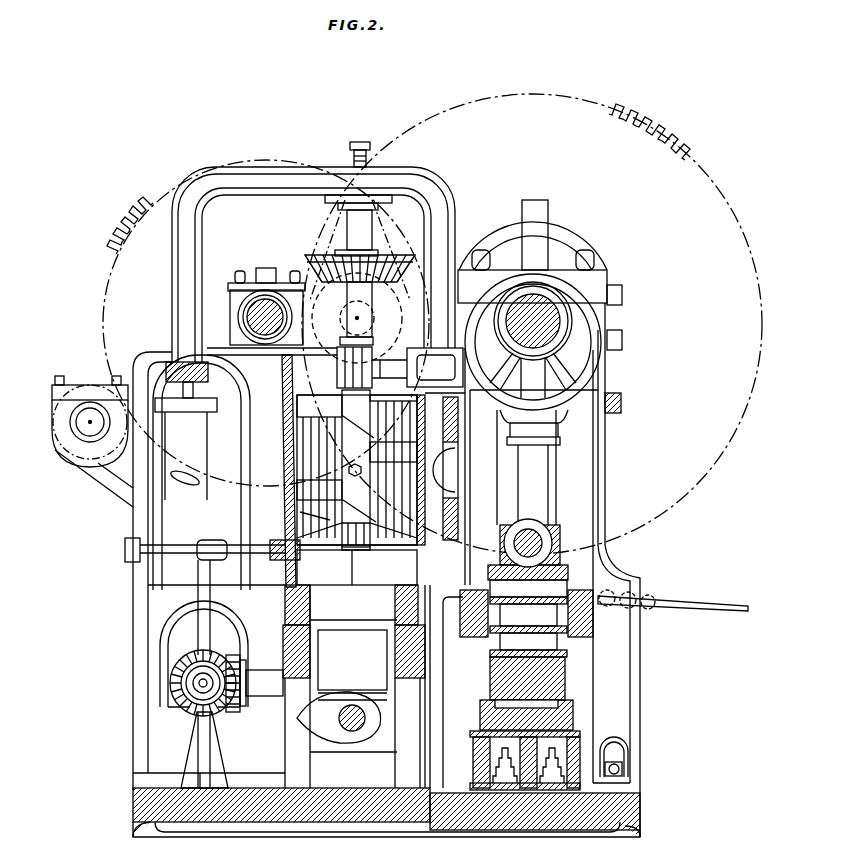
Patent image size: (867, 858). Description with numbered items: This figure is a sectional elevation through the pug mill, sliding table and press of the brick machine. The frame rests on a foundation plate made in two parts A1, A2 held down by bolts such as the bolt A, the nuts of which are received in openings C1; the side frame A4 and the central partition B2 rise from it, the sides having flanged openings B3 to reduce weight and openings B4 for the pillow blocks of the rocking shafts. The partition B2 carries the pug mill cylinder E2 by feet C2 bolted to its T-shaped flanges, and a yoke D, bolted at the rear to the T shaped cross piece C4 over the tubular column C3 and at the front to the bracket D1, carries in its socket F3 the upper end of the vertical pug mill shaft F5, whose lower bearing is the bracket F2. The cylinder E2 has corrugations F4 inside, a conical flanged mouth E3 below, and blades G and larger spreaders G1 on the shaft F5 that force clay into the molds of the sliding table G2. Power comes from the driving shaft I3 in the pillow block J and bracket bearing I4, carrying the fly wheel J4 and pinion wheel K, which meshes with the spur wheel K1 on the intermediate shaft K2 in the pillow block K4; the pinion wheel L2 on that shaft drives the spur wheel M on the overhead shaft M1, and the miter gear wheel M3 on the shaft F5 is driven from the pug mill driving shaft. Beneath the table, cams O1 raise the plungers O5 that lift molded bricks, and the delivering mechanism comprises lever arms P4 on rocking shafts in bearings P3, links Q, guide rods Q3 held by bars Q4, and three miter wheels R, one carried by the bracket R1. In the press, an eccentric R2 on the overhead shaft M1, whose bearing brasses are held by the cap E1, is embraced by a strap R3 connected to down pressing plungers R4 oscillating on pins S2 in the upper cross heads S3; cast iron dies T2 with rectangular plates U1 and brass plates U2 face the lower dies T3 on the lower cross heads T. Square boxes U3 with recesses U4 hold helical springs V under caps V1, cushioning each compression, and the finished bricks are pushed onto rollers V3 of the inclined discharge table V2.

The spur wheel M is at (688, 154).
The spur wheel K1 is at (128, 233).
The yoke D is at (186, 294).
The socket F3 is at (362, 201).
The pug mill shaft F5 is at (347, 228).
The miter gear wheel M3 is at (386, 266).
The bracket F2 is at (340, 372).
The bracket D1 is at (435, 367).
The pillow block K4 is at (243, 310).
The intermediate shaft K2 is at (252, 322).
The pinion wheel L2 is at (278, 280).
The pug mill cylinder E2 is at (281, 471).
The steel blades G is at (364, 436).
The spreaders G1 is at (392, 545).
The corrugations F4 is at (302, 517).
The feet C2 is at (450, 420).
The side frame A4 is at (135, 612).
The flanged opening B3 is at (228, 450).
The T shaped cross piece C4 is at (208, 390).
The tubular column C3 is at (190, 462).
The pinion wheel K is at (52, 432).
The driving shaft I3 is at (92, 424).
The bracket bearing I4 is at (104, 478).
The links Q is at (212, 545).
The guide rods Q3 is at (178, 548).
The bars Q4 is at (128, 546).
The flanged mouth E3 is at (286, 578).
The flanged opening B4 is at (199, 645).
The lever arms P4 is at (212, 590).
The miter wheels R is at (192, 660).
The bracket R1 is at (256, 692).
The bearings P3 is at (197, 770).
The sliding table G2 is at (292, 620).
The plungers O5 is at (353, 691).
The cams O1 is at (330, 725).
The bed plate part A1 is at (135, 800).
The bed plate part A2 is at (640, 806).
The cap E1 is at (600, 290).
The eccentric R2 is at (586, 333).
The overhead shaft M1 is at (533, 317).
The straps R3 is at (592, 378).
The down pressing plungers R4 is at (526, 505).
The upper cross heads S3 is at (502, 560).
The pin S2 is at (543, 546).
The partition B2 is at (606, 481).
The cast iron dies T2 is at (552, 594).
The rectangular plate U1 is at (528, 611).
The brass plate U2 is at (528, 618).
The pillow block J is at (588, 630).
The dies T3 is at (500, 652).
The fly wheel J4 is at (560, 680).
The lower cross heads T is at (560, 724).
The caps V1 is at (476, 733).
The recesses U4 is at (473, 755).
The square boxes U3 is at (473, 776).
The helical springs V is at (560, 772).
The openings C1 is at (614, 748).
The bolt A is at (622, 768).
The rollers V3 is at (627, 591).
The inclined discharge table V2 is at (745, 608).